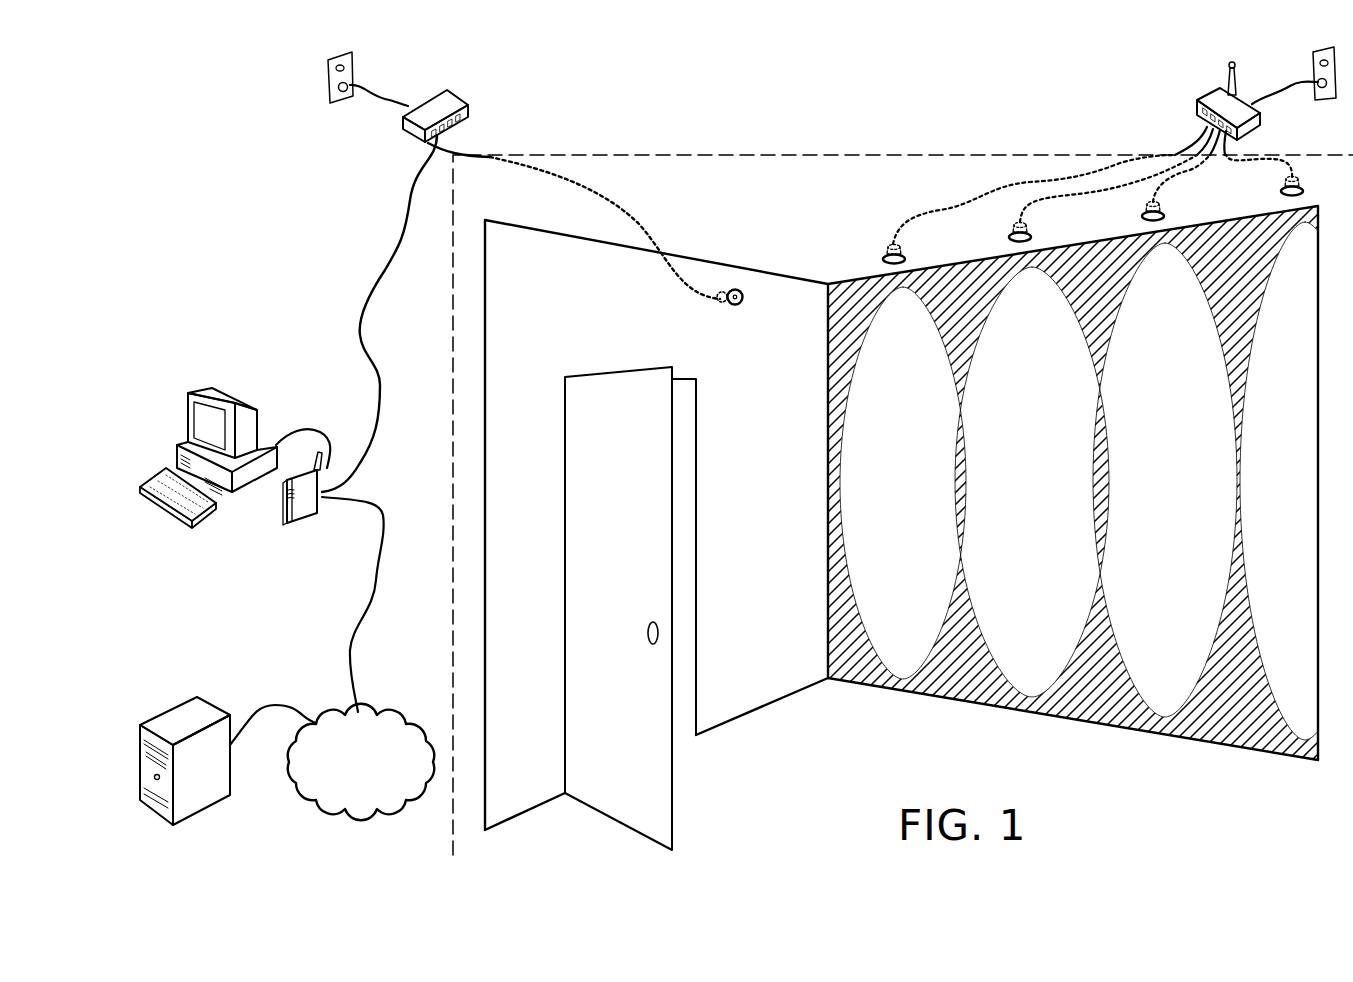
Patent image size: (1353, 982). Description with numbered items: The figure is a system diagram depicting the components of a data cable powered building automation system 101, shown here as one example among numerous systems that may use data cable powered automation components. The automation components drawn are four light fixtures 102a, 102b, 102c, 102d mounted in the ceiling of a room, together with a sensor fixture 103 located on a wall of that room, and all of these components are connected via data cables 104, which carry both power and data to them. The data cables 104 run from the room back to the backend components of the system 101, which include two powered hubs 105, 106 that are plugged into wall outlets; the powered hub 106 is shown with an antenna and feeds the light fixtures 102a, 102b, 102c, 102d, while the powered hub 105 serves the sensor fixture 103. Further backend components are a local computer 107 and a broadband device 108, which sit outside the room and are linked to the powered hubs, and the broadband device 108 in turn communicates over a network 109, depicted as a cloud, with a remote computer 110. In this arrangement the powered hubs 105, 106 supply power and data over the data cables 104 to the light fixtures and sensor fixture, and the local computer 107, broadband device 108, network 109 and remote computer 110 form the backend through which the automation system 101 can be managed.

The data cable powered building automation system 101 is at (227, 113).
The light fixture 102a is at (880, 248).
The light fixture 102b is at (1008, 236).
The light fixture 102c is at (1140, 215).
The light fixture 102d is at (1280, 191).
The sensor fixture 103 is at (737, 291).
The data cables 104 is at (470, 151).
The powered hub 105 is at (450, 90).
The powered hub 106 is at (1198, 100).
The local computer 107 is at (188, 440).
The broadband device 108 is at (287, 525).
The network 109 is at (361, 658).
The remote computer 110 is at (212, 705).